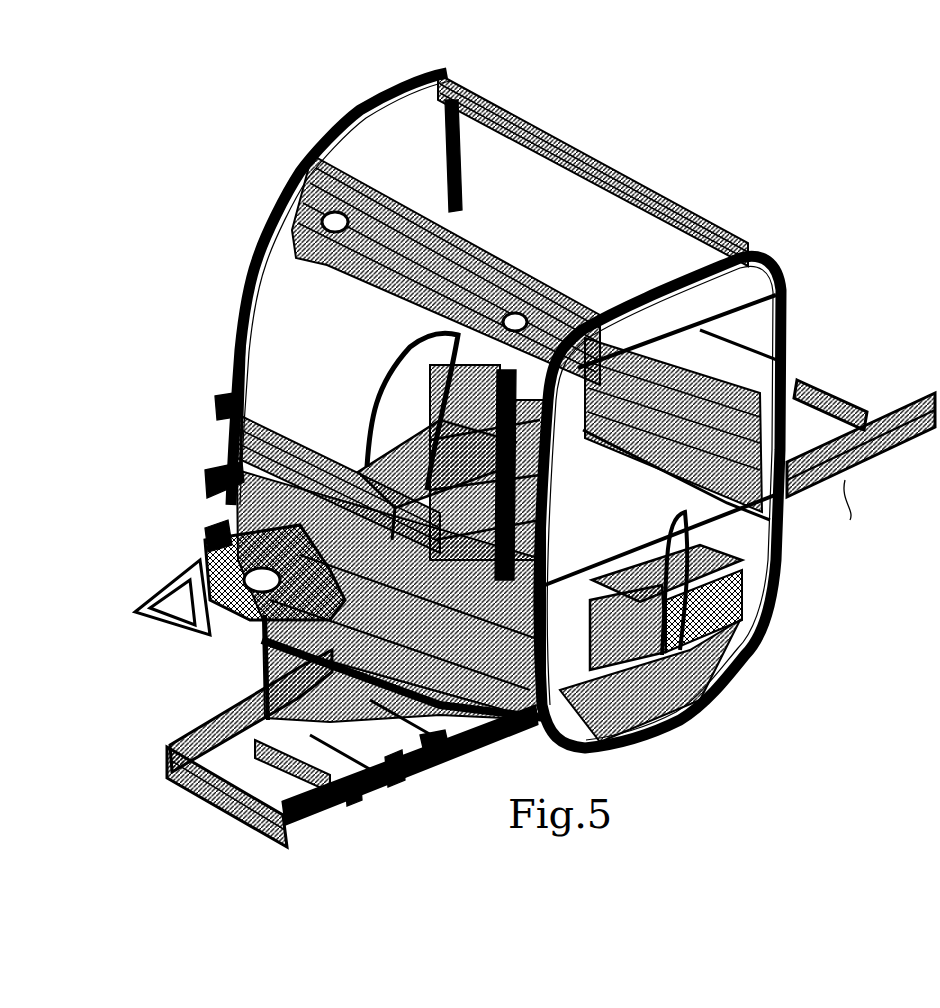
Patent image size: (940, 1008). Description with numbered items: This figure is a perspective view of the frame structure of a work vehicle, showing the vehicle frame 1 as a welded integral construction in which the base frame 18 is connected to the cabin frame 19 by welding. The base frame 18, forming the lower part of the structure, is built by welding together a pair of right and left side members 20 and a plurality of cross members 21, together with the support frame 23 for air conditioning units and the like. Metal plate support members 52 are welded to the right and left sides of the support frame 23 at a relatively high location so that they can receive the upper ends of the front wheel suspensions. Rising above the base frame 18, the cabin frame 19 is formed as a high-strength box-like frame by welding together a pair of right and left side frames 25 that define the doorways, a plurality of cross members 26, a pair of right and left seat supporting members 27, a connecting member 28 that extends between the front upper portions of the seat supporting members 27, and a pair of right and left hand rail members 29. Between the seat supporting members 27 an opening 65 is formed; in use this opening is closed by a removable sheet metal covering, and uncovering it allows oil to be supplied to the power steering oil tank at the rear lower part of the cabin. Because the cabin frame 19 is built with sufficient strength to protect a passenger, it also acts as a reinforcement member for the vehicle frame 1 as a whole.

The vehicle frame 1 is at (108, 466).
The base frame 18 is at (849, 490).
The cabin frame 19 is at (229, 293).
The side member 20 is at (228, 740).
The cross member 21 is at (838, 390).
The support frame 23 is at (222, 620).
The side frame 25 is at (372, 118).
The cross member 26 is at (562, 136).
The seat supporting member 27 is at (416, 432).
The connecting member 28 is at (574, 577).
The hand rail member 29 is at (408, 347).
The metal plate support member 52 is at (212, 534).
The opening 65 is at (636, 487).